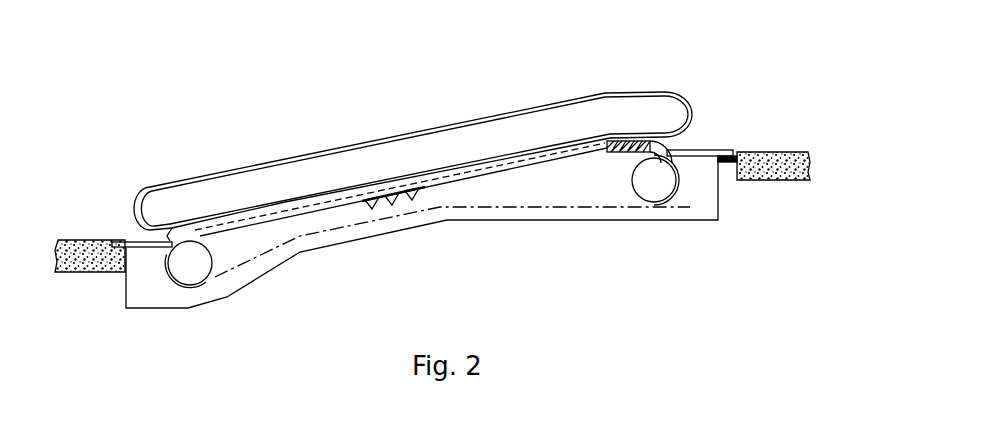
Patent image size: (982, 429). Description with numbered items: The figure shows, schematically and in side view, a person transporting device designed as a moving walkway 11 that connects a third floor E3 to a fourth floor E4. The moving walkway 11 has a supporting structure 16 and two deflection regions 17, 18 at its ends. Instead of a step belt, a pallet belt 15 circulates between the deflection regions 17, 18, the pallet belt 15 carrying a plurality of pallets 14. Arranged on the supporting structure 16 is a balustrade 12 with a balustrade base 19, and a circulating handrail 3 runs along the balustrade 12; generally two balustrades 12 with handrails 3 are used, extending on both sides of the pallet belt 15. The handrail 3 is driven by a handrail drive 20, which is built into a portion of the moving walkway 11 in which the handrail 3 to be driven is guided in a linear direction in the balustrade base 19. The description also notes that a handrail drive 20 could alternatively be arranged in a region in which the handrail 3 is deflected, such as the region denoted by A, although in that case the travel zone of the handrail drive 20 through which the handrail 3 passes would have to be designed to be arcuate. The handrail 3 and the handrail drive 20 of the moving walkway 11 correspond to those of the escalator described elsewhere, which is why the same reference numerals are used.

The moving walkway 11 is at (311, 137).
The balustrade 12 is at (255, 190).
The handrail 3 is at (572, 100).
The balustrade base 19 is at (220, 225).
The region A is at (594, 134).
The pallet belt 15 is at (407, 184).
The pallets 14 is at (383, 200).
The handrail drive 20 is at (640, 140).
The deflection region 17 is at (183, 293).
The deflection region 18 is at (669, 201).
The supporting structure 16 is at (700, 207).
The third floor E3 is at (90, 242).
The fourth floor E4 is at (773, 149).